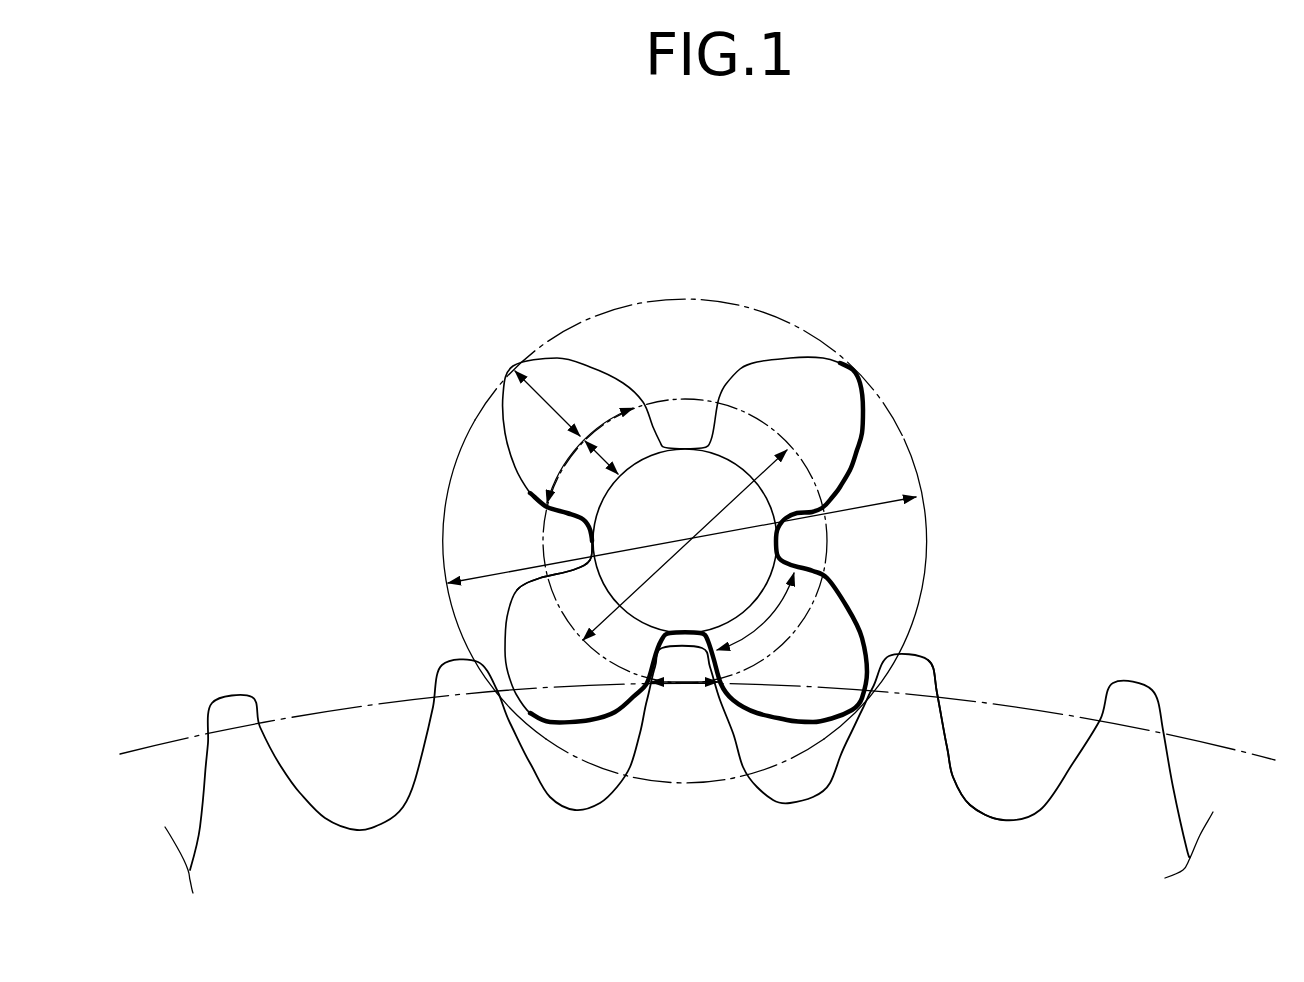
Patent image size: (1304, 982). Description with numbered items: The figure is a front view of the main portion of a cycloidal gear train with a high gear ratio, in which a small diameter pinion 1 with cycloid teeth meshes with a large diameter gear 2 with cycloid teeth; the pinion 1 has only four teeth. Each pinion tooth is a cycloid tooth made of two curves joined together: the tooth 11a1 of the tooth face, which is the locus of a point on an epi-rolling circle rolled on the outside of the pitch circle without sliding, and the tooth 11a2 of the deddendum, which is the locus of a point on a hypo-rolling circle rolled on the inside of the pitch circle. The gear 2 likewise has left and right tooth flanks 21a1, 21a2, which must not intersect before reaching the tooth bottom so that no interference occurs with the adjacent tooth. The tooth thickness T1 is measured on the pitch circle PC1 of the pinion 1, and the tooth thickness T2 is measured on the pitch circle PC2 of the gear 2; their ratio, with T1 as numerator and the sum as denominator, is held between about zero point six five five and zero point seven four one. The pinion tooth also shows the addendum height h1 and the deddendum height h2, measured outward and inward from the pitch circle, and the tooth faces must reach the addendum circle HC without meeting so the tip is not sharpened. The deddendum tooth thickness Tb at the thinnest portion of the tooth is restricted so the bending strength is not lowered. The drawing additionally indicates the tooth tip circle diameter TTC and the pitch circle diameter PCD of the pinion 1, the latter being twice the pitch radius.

The pinion 1 is at (822, 355).
The gear 2 is at (1137, 681).
The tooth of the tooth face 11a1 is at (540, 497).
The tooth of the deddendum 11a2 is at (580, 521).
The tooth flank of the gear 21a1 is at (940, 680).
The tooth flank of the gear 21a2 is at (952, 762).
The addendum circle HC is at (883, 397).
The pitch circle of the pinion PC1 is at (829, 553).
The pitch circle of the gear PC2 is at (1220, 735).
The addendum height h1 is at (560, 385).
The deddendum height h2 is at (610, 450).
The tooth thickness of the pinion T1 is at (565, 470).
The tooth thickness of the gear T2 is at (685, 686).
The deddendum tooth thickness Tb is at (840, 625).
The tooth tip circle diameter TTC is at (861, 503).
The pitch circle diameter 2rp PCD is at (777, 533).